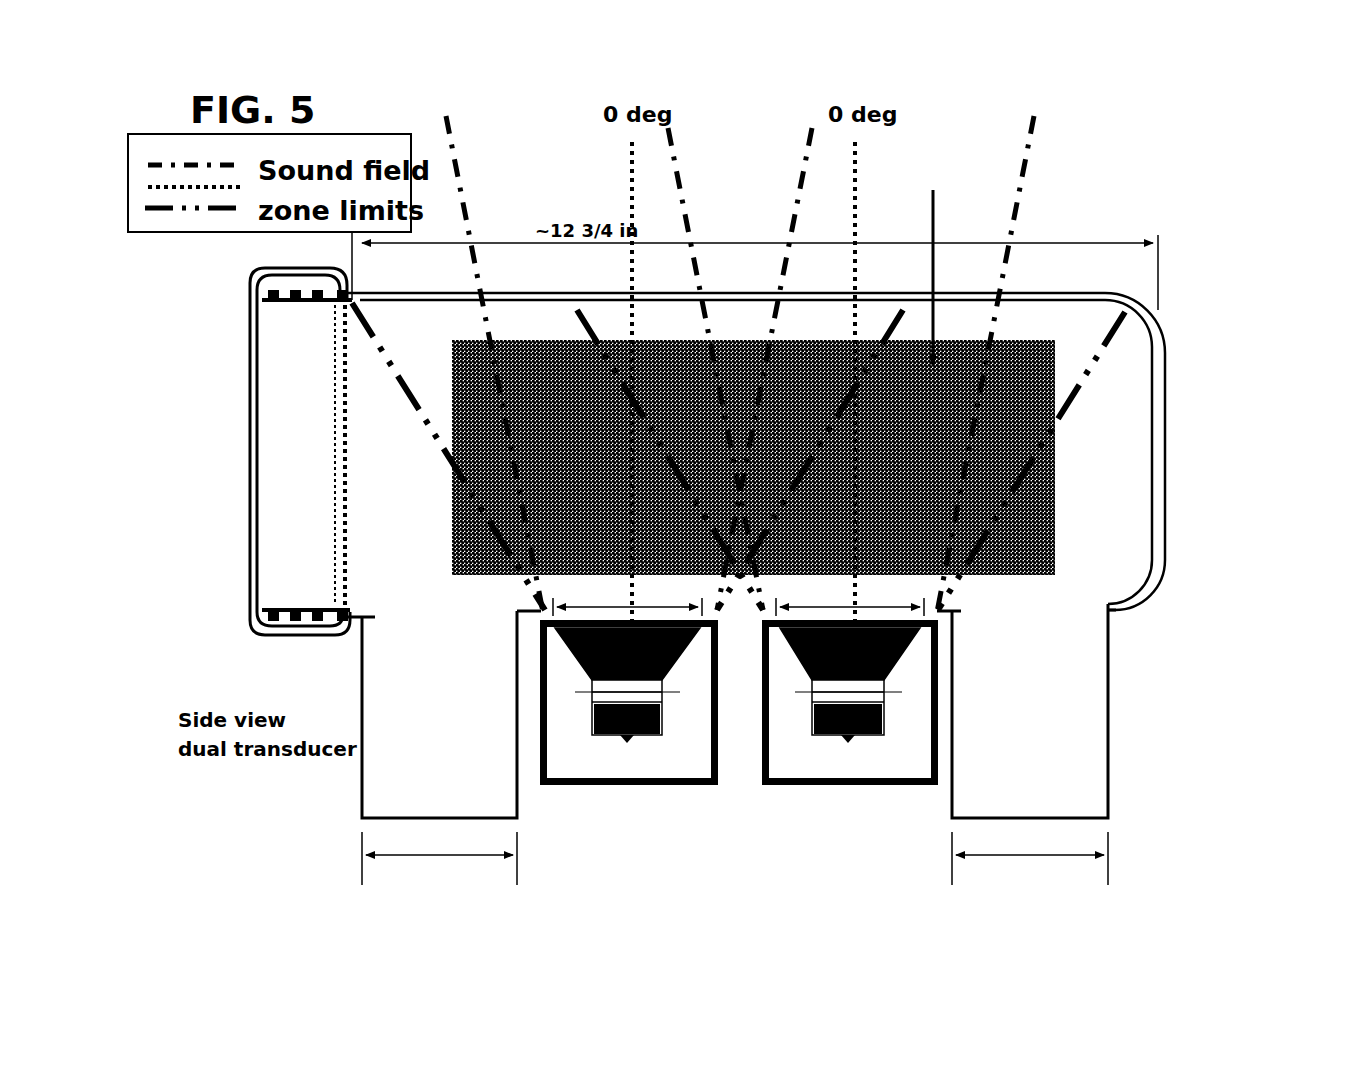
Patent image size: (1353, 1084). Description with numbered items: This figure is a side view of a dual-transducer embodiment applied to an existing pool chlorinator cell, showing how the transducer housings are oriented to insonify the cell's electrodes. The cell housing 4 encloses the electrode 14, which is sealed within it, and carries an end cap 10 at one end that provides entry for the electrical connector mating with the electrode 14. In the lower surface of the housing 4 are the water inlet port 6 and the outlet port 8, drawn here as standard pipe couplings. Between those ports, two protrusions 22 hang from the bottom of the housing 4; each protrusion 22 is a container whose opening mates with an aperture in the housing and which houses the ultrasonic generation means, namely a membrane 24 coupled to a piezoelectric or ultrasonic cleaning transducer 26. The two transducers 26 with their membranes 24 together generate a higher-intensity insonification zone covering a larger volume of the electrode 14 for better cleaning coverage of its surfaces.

The housing 4 is at (1165, 425).
The water inlet port 6 is at (390, 767).
The outlet port 8 is at (1095, 743).
The end cap 10 is at (285, 460).
The electrode 14 is at (1035, 530).
The protrusion or container 22 is at (783, 765).
The membrane 24 is at (538, 625).
The ultrasonic cleaning transducer 26 is at (592, 682).